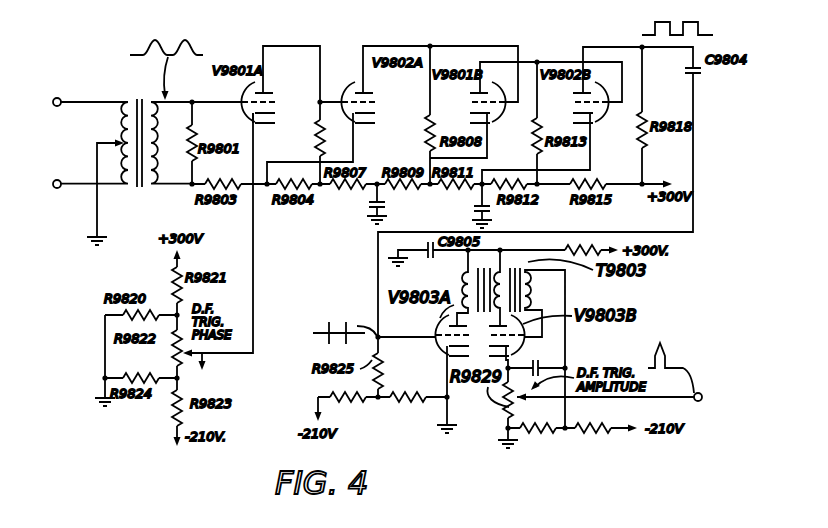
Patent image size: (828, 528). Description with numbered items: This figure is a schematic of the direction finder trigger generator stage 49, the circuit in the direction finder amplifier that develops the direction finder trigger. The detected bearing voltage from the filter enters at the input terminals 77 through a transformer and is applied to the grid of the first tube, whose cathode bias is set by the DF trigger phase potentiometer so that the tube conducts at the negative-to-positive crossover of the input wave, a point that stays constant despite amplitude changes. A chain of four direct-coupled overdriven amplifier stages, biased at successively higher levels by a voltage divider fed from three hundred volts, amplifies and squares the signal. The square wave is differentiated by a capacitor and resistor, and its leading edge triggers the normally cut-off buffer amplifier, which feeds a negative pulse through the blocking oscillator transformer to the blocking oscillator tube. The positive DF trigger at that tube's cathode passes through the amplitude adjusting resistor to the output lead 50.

The input terminals 77 is at (63, 108).
The trigger generator stage 49 is at (450, 41).
The lead 50 is at (622, 372).